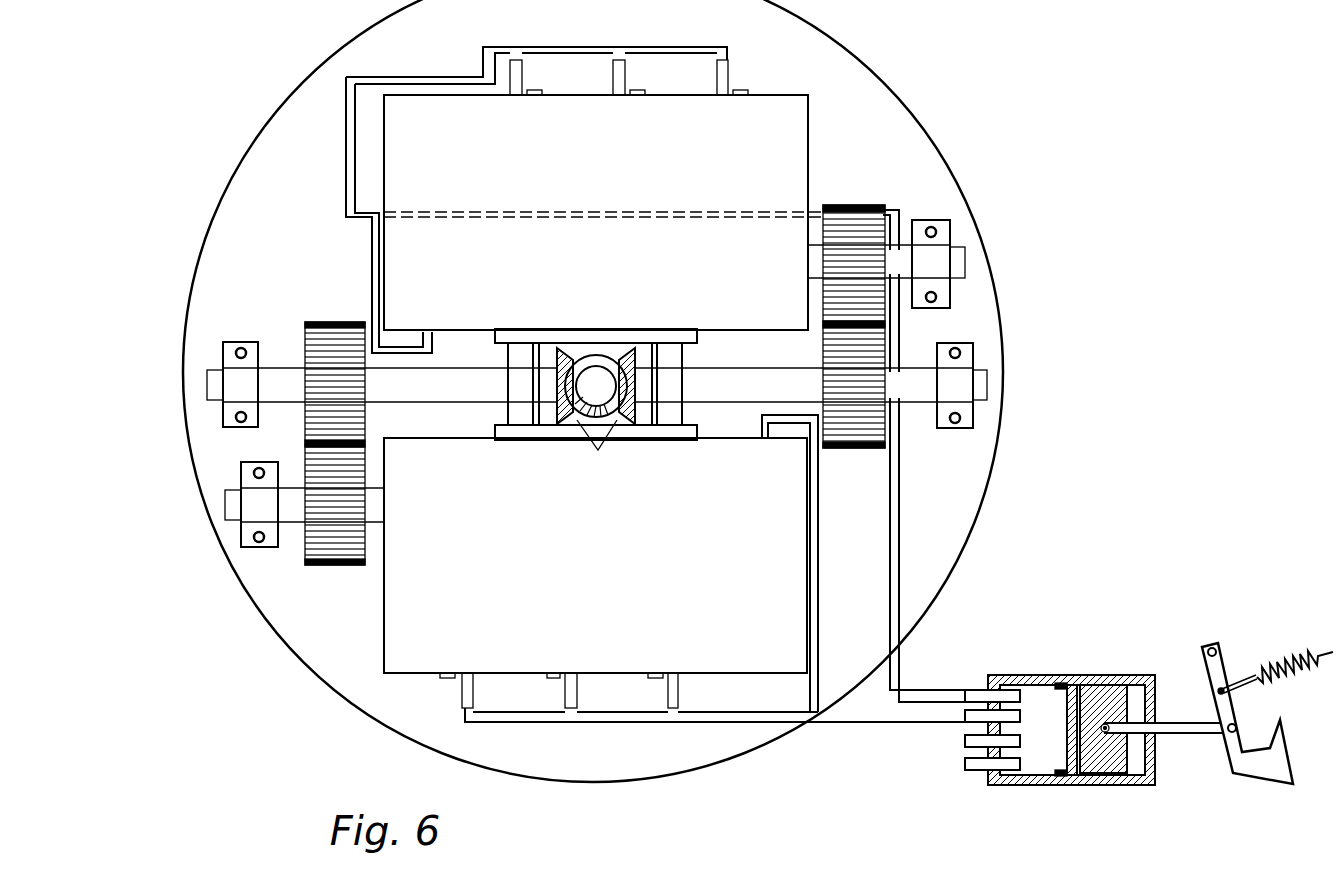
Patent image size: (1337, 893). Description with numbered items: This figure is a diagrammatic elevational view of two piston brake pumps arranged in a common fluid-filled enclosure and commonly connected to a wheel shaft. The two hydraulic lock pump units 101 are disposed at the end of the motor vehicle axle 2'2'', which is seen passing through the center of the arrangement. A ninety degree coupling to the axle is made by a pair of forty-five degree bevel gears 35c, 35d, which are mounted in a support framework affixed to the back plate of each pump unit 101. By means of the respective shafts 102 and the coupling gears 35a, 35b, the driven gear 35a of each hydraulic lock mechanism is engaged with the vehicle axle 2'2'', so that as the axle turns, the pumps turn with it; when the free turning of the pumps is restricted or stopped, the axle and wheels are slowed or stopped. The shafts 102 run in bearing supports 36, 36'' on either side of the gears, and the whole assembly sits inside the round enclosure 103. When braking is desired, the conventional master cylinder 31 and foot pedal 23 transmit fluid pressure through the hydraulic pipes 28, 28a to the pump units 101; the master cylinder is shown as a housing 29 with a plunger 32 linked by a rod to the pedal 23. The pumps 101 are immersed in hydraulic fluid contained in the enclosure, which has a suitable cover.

The foot pedal 23 is at (1242, 758).
The hydraulic pipes 28 is at (936, 690).
The electrical conductor 28a is at (728, 82).
The solenoid housing 29 is at (1043, 758).
The master cylinder 31 is at (1095, 680).
The plunger 32 is at (1167, 730).
The driven gear 35a is at (868, 205).
The coupling gear 35b is at (337, 322).
The bevel gear 35c is at (598, 450).
The bevel gear 35d is at (571, 349).
The bearing 36 is at (177, 484).
The bearing 36'' is at (1036, 324).
The hydraulic lock pump unit 101 is at (643, 593).
The shaft 102 is at (413, 402).
The housing 103 is at (296, 252).
The vehicle axle 2'2'' is at (630, 342).